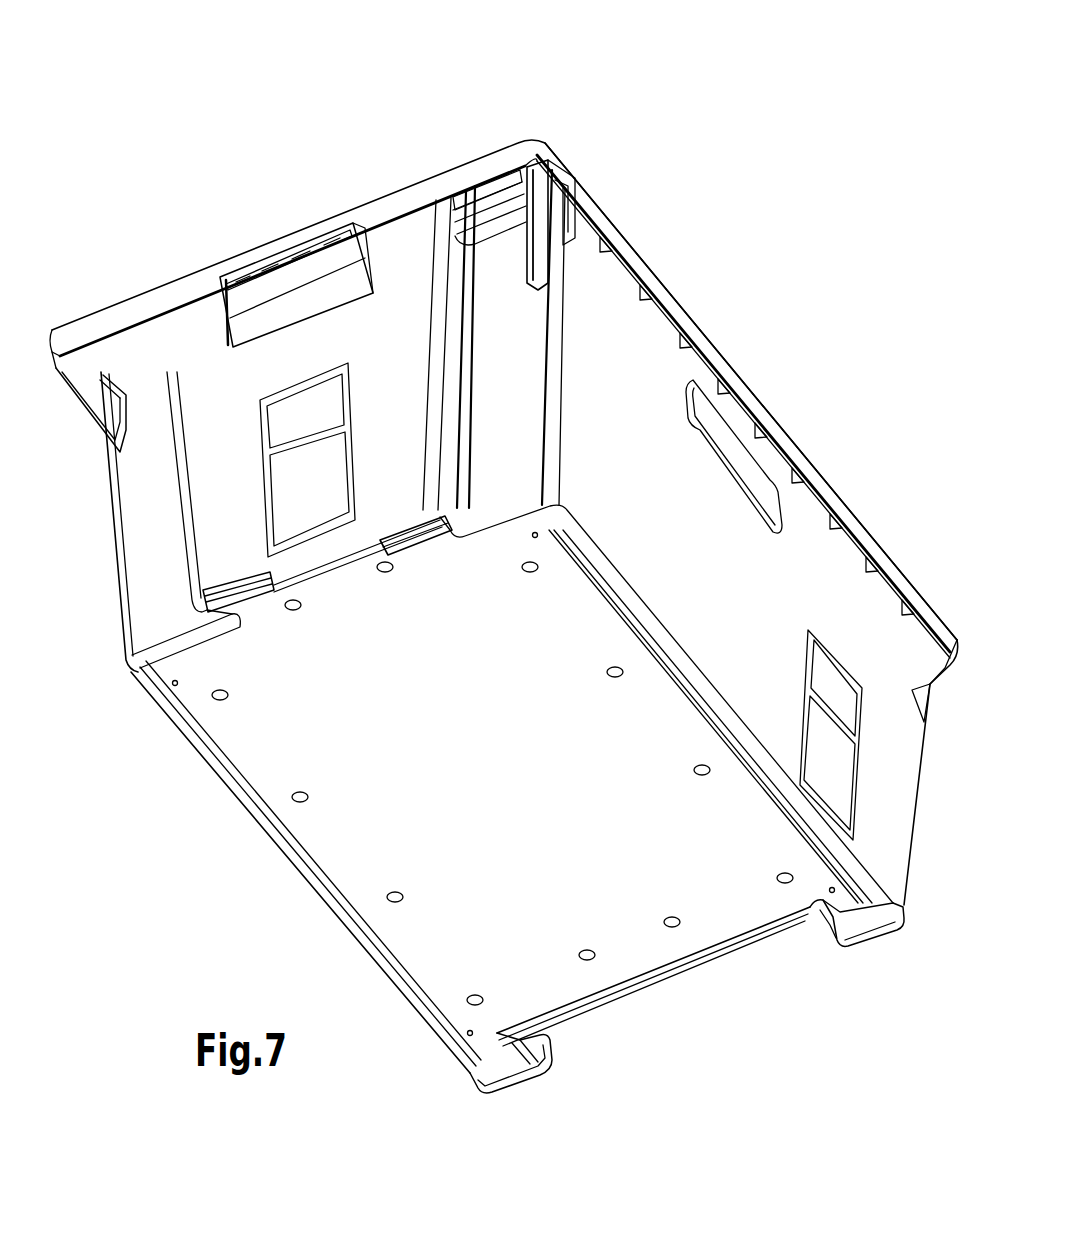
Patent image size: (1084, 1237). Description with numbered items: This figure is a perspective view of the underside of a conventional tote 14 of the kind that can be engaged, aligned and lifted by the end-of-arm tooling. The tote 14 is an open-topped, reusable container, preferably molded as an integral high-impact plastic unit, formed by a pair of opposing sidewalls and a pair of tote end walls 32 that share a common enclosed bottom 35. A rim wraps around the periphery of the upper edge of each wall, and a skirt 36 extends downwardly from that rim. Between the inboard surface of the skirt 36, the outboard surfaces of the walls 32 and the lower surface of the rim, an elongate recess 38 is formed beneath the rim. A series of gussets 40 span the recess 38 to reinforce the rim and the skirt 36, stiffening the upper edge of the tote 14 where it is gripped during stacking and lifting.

The tote 14 is at (858, 144).
The tote end wall 32 is at (217, 503).
The common enclosed bottom 35 is at (347, 828).
The skirt 36 is at (493, 160).
The recess 38 is at (667, 308).
The gusset 40 is at (748, 392).